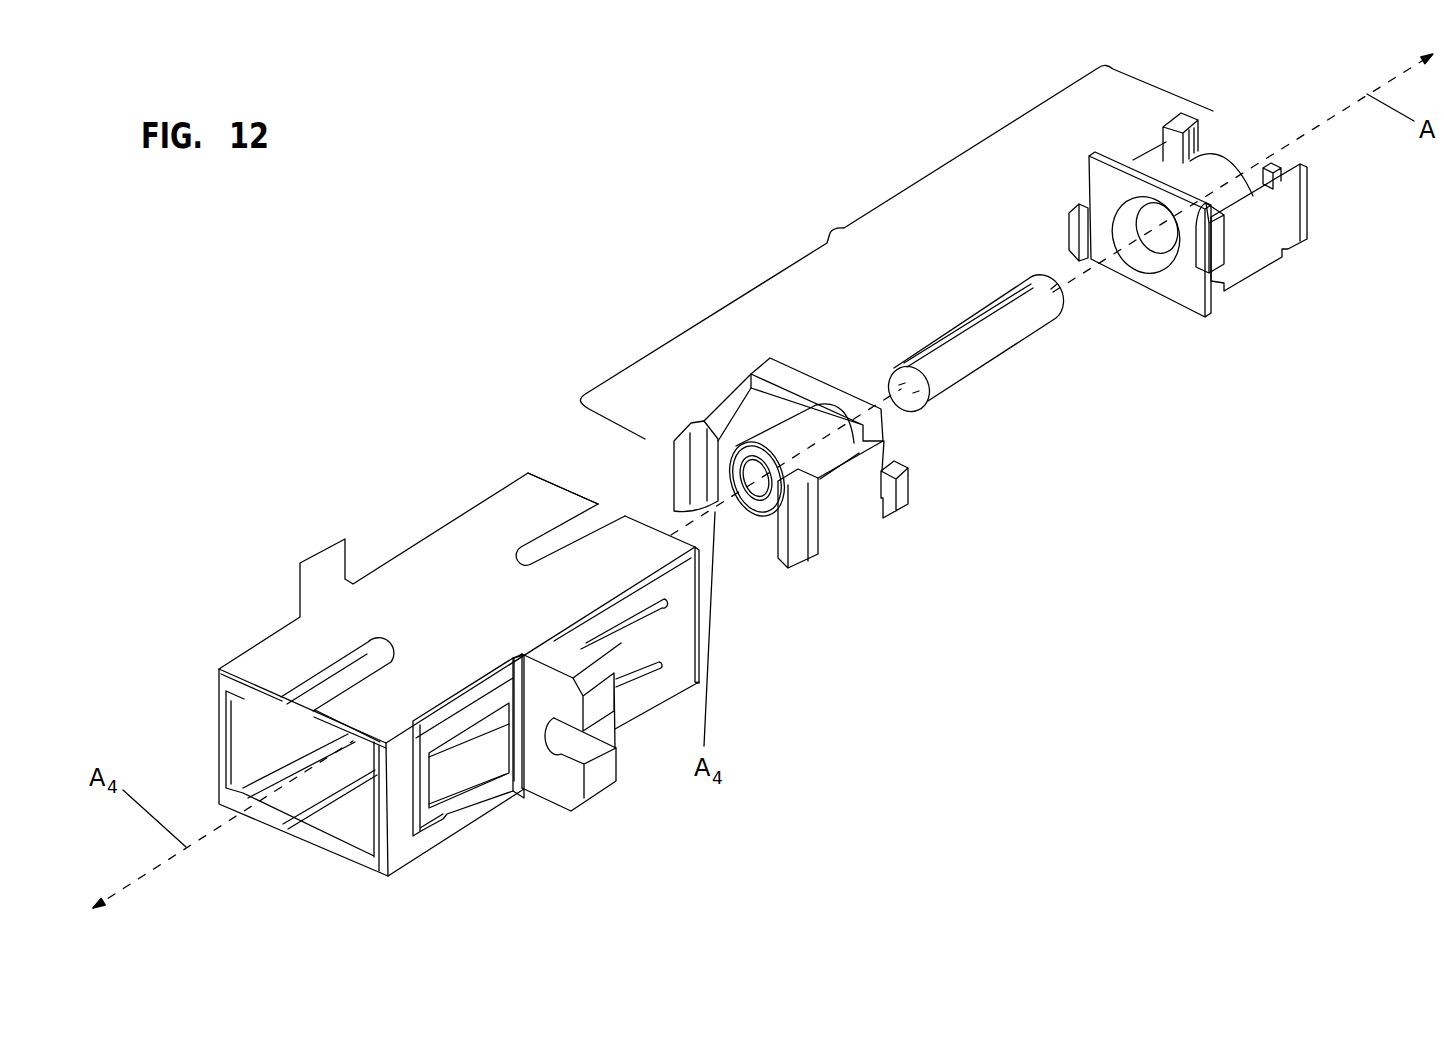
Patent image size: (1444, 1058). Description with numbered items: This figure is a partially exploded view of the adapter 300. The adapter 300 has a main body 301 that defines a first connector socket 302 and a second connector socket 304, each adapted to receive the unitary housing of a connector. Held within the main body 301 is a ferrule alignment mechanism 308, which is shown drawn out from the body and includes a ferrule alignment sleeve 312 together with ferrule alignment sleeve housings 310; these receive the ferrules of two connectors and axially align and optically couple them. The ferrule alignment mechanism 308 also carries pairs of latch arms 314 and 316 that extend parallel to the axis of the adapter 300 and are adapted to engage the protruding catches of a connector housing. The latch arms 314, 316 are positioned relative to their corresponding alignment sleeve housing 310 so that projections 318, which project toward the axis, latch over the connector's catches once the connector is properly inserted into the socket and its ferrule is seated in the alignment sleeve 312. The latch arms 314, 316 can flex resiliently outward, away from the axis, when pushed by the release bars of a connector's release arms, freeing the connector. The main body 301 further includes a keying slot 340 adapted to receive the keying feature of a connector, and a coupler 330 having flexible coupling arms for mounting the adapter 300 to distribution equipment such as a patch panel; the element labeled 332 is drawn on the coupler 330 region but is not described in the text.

The adapter 300 is at (430, 302).
The main body 301 is at (441, 573).
The first connector socket 302 is at (360, 822).
The second connector socket 304 is at (580, 531).
The ferrule alignment mechanism 308 is at (828, 233).
The ferrule alignment sleeve housing 310 is at (804, 426).
The ferrule alignment sleeve 312 is at (994, 347).
The latch arm 314 is at (1138, 157).
The latch arm 316 is at (719, 420).
The projection 318 is at (706, 486).
The coupler 330 is at (460, 812).
The latch 332 is at (487, 763).
The keying slot 340 is at (538, 550).